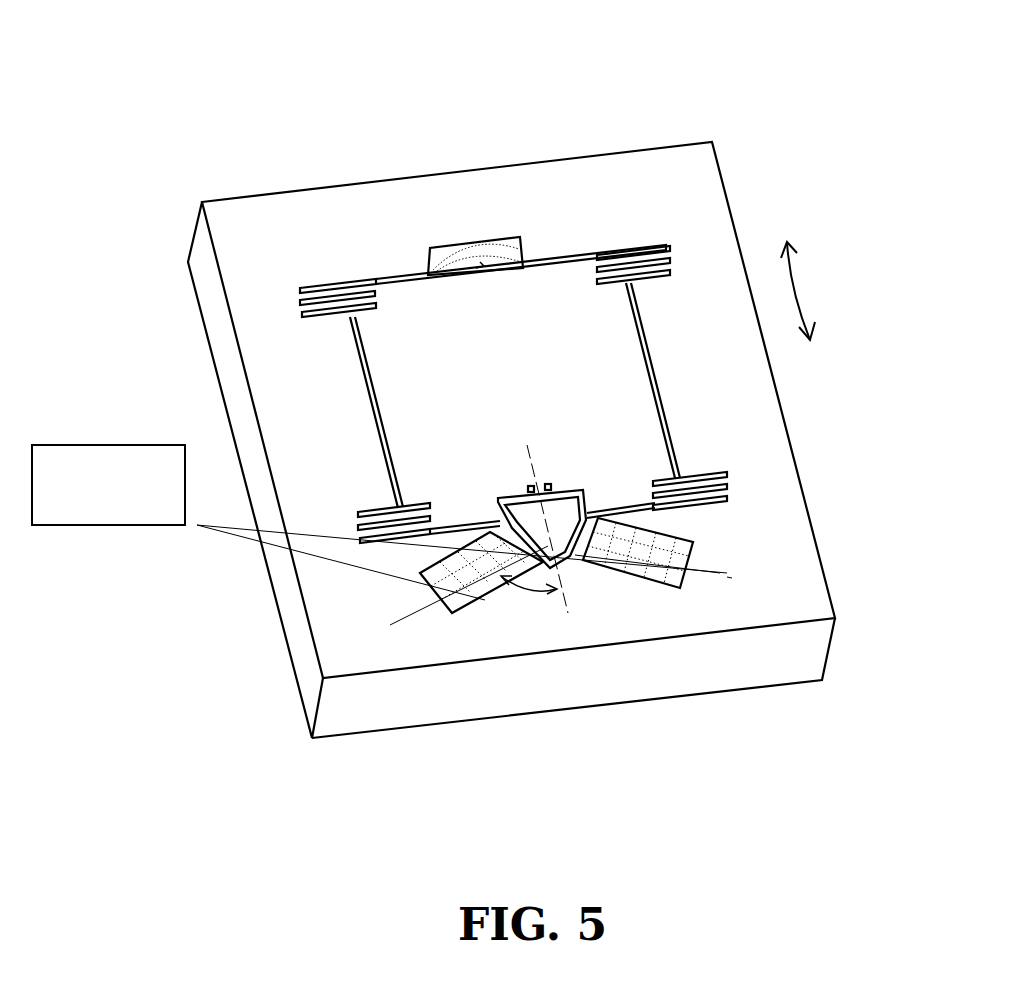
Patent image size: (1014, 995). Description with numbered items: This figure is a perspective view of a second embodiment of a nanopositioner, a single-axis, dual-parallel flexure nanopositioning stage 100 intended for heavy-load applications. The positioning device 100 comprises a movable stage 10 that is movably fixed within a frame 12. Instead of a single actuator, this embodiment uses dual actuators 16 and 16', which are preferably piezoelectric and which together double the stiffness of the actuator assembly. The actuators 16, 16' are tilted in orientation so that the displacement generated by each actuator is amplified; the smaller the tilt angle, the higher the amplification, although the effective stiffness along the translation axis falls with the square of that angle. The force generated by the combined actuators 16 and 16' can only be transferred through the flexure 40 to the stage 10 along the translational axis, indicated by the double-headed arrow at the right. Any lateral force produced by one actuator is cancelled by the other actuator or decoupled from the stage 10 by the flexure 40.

The nanopositioning stage 100 is at (598, 128).
The movable stage 10 is at (527, 403).
The frame 12 is at (736, 363).
The actuator 16 is at (656, 664).
The actuator 16' is at (472, 695).
The flexure 40 is at (547, 490).